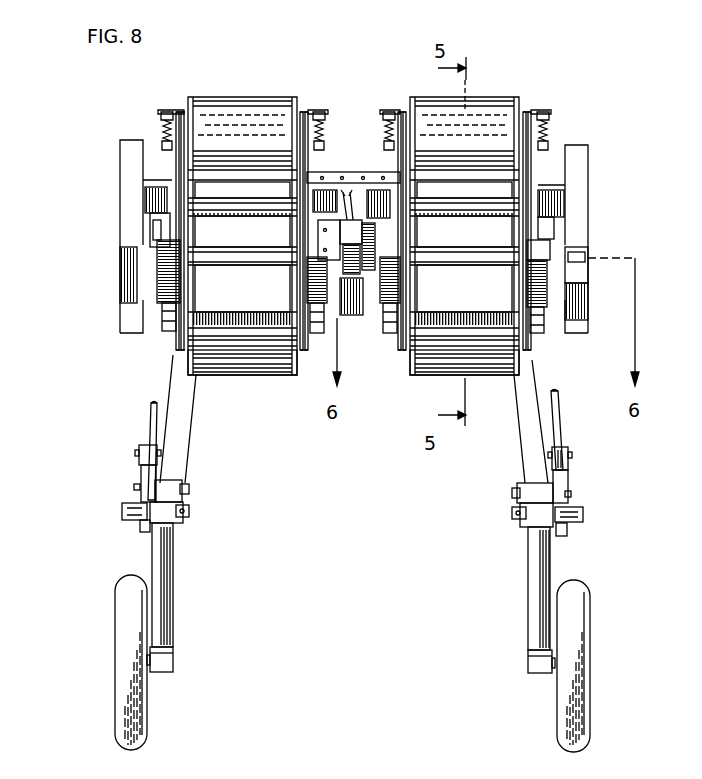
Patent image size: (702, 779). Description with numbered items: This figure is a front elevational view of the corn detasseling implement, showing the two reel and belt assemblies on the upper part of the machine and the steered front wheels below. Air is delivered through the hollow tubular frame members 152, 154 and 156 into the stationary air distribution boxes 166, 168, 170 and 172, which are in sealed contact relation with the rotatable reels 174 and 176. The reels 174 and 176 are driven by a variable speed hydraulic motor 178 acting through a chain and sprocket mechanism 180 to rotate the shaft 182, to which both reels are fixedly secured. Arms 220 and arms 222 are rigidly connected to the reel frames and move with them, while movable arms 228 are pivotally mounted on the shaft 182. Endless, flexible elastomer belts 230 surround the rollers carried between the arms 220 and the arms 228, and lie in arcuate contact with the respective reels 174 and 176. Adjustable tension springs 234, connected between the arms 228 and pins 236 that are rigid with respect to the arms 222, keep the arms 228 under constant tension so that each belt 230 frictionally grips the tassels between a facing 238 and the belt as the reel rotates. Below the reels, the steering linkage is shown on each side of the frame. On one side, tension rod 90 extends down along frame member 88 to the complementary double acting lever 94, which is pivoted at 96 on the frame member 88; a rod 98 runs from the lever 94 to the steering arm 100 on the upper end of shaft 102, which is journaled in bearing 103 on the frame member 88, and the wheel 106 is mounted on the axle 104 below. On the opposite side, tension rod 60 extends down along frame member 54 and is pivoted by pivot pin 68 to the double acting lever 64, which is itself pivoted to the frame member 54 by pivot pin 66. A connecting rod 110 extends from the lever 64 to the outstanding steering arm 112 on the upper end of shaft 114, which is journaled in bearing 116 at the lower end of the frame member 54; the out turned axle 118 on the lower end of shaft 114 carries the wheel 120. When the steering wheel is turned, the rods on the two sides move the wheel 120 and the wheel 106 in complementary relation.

The frame member 54 is at (525, 427).
The tension rod 60 is at (558, 410).
The double acting lever 64 is at (567, 480).
The pivot pin 66 is at (568, 495).
The pivot pin 68 is at (568, 457).
The frame member 88 is at (182, 426).
The tension rod 90 is at (150, 415).
The double acting lever 94 is at (140, 478).
The pivot 96 is at (135, 488).
The rod 98 is at (122, 510).
The steering arm 100 is at (122, 520).
The shaft 102 is at (166, 515).
The bearing 103 is at (173, 577).
The axle 104 is at (147, 672).
The wheel 106 is at (120, 677).
The connecting rod 110 is at (585, 515).
The steering arm 112 is at (578, 522).
The shaft 114 is at (535, 518).
The bearing 116 is at (538, 585).
The axle 118 is at (553, 675).
The wheel 120 is at (578, 698).
The hollow tubular frame member 152 is at (578, 197).
The hollow tubular frame member 154 is at (300, 193).
The hollow tubular frame member 156 is at (125, 217).
The air distribution box 166 is at (545, 312).
The air distribution box 168 is at (381, 306).
The air distribution box 170 is at (313, 280).
The air distribution box 172 is at (160, 295).
The reel 174 is at (478, 88).
The reel 176 is at (228, 88).
The hydraulic motor 178 is at (340, 237).
The chain and sprocket mechanism 180 is at (377, 213).
The shaft 182 is at (590, 255).
The arm 220 is at (403, 348).
The arm 222 is at (305, 112).
The movable arm 228 is at (176, 183).
The belt 230 is at (202, 374).
The tension spring 234 is at (165, 135).
The pin 236 is at (320, 115).
The facing 238 is at (257, 308).